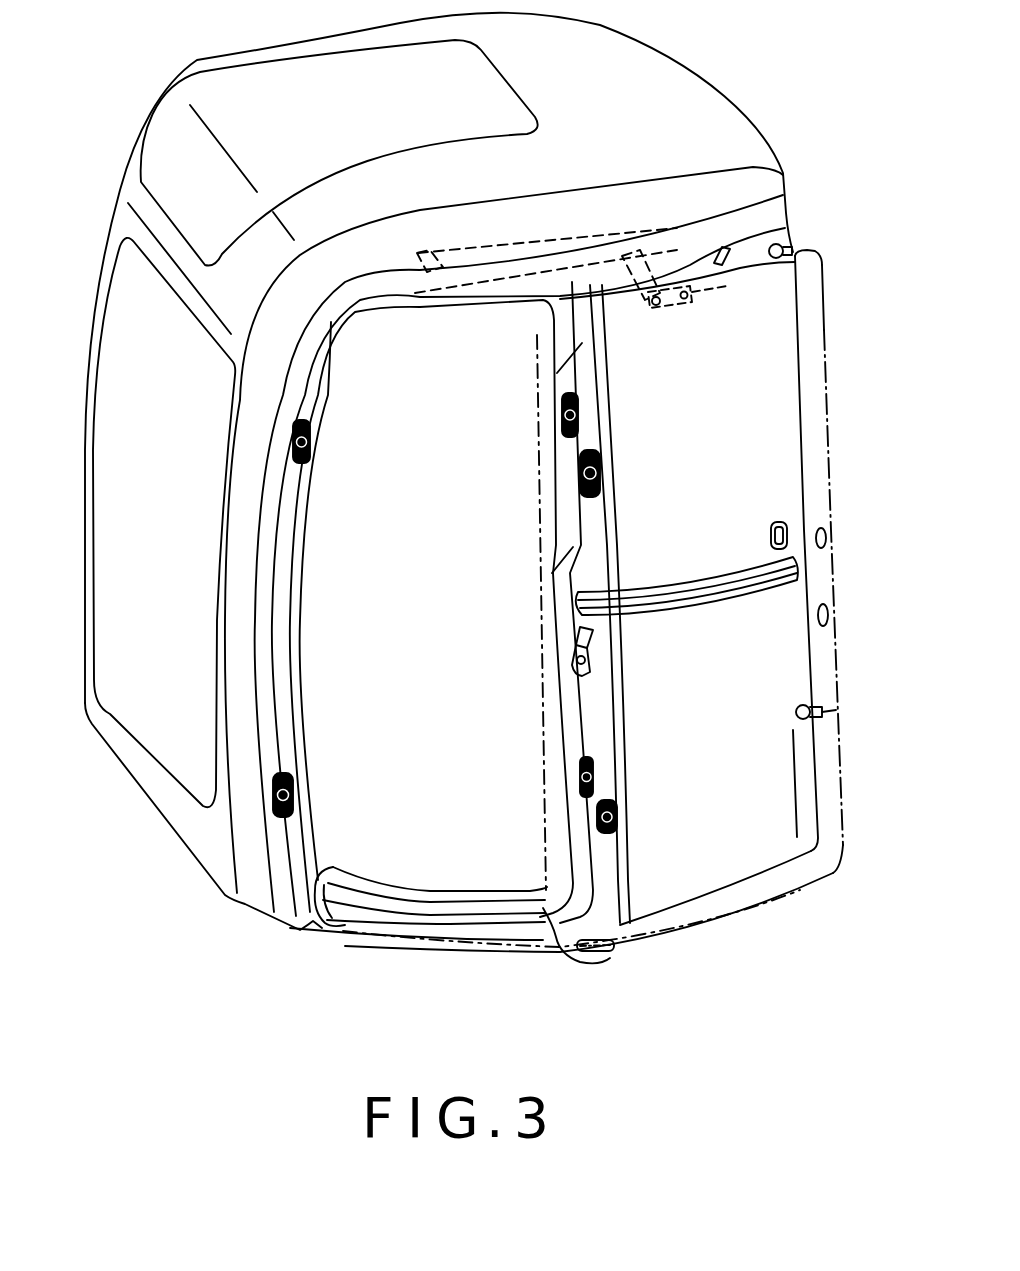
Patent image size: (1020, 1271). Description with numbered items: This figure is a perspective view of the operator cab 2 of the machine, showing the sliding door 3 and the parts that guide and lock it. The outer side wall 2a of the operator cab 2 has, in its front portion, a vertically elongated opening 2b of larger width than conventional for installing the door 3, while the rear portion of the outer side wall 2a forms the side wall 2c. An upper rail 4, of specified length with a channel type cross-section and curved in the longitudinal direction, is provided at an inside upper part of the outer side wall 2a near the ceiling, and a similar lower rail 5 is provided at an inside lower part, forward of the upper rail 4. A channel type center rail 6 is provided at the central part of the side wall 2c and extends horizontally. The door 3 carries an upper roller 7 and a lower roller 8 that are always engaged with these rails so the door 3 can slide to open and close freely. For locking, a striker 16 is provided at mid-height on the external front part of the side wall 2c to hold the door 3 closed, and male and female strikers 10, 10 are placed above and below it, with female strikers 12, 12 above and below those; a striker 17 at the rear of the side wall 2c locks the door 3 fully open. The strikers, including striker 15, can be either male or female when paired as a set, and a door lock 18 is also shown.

The operator cab 2 is at (670, 80).
The outer side wall 2a is at (545, 300).
The opening 2b is at (362, 594).
The side wall 2c is at (790, 397).
The door 3 is at (813, 279).
The upper rail 4 is at (636, 248).
The lower rail 5 is at (405, 917).
The center rail 6 is at (678, 592).
The upper roller 7 is at (648, 298).
The lower roller 8 is at (558, 965).
The strikers 10 is at (310, 440).
The female strikers 12 is at (560, 416).
The striker 15 is at (795, 250).
The striker 16 is at (568, 668).
The striker 17 is at (790, 518).
The door lock 18 is at (828, 540).